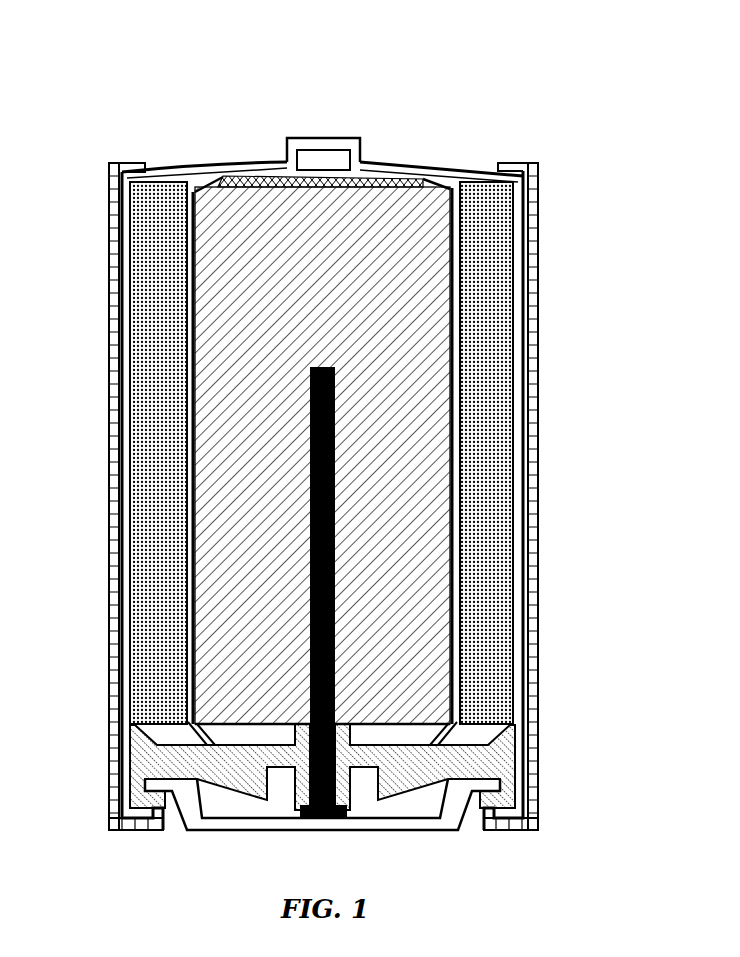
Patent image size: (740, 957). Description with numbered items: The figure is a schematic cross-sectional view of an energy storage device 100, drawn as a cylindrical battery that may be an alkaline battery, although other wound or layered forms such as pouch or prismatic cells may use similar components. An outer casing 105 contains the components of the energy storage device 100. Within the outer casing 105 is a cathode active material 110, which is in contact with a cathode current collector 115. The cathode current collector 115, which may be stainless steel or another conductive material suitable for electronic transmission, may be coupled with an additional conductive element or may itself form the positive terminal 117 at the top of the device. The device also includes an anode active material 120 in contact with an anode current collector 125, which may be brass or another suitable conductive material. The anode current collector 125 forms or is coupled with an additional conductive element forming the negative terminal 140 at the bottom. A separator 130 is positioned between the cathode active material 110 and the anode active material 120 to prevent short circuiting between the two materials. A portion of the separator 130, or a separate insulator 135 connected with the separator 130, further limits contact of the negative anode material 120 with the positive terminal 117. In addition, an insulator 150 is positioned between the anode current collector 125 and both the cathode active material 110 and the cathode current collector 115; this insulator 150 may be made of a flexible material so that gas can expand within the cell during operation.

The energy storage device 100 is at (137, 92).
The outer casing 105 is at (538, 248).
The cathode active material 110 is at (532, 337).
The cathode current collector 115 is at (528, 297).
The positive terminal 117 is at (318, 138).
The anode active material 120 is at (207, 191).
The anode current collector 125 is at (302, 820).
The separator 130 is at (430, 184).
The insulator 135 is at (365, 161).
The negative terminal 140 is at (428, 832).
The insulator 150 is at (517, 750).